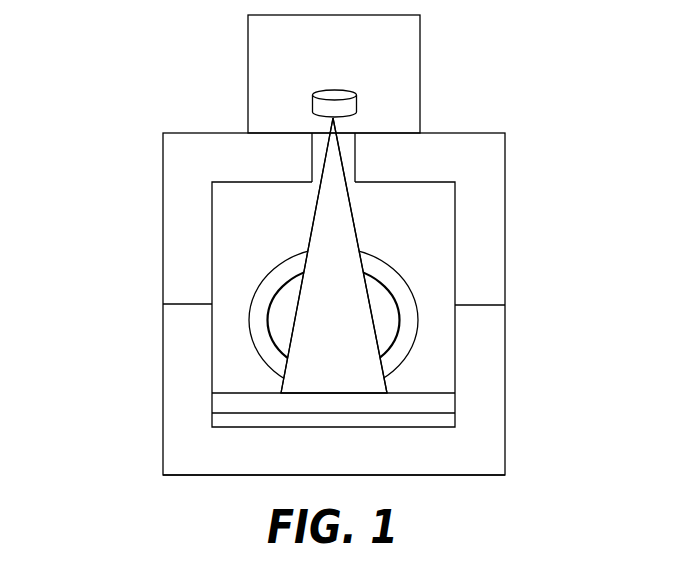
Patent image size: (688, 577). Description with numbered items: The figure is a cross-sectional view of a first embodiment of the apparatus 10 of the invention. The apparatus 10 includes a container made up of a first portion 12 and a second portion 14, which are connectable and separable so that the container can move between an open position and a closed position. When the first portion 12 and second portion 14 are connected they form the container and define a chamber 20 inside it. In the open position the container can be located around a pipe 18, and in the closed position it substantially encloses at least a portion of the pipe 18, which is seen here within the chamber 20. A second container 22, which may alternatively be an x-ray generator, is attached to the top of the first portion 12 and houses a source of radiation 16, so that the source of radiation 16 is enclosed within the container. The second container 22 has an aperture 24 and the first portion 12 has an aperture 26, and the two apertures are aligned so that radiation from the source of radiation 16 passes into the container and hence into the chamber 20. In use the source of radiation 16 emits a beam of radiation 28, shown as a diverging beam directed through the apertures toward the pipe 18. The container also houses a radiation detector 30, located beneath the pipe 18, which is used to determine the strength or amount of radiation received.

The apparatus 10 is at (112, 85).
The first portion 12 is at (493, 239).
The second portion 14 is at (493, 428).
The source of radiation 16 is at (335, 90).
The pipe 18 is at (272, 283).
The chamber 20 is at (440, 360).
The second container 22 is at (261, 49).
The aperture 24 is at (353, 133).
The aperture 26 is at (312, 184).
The beam of radiation 28 is at (354, 222).
The radiation detector 30 is at (219, 405).